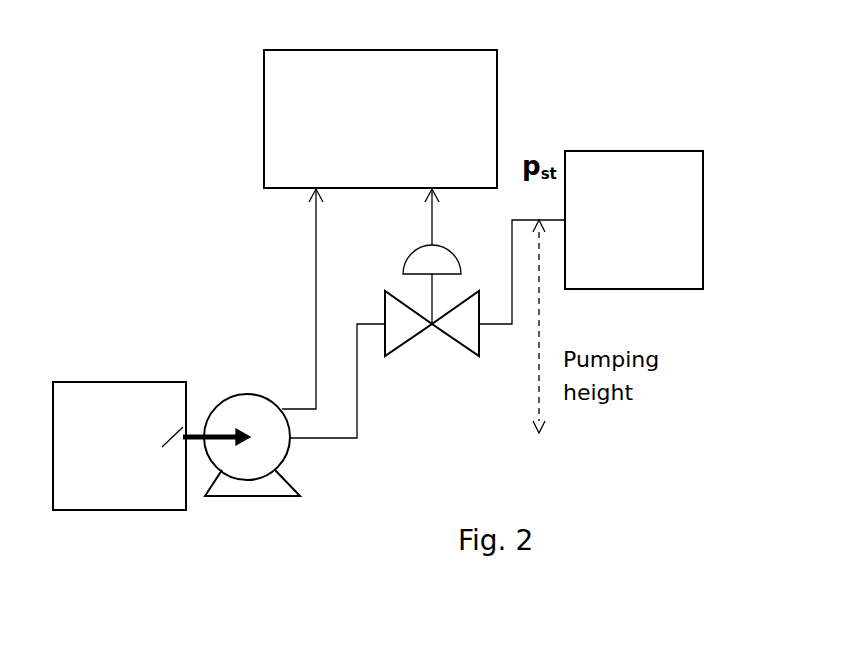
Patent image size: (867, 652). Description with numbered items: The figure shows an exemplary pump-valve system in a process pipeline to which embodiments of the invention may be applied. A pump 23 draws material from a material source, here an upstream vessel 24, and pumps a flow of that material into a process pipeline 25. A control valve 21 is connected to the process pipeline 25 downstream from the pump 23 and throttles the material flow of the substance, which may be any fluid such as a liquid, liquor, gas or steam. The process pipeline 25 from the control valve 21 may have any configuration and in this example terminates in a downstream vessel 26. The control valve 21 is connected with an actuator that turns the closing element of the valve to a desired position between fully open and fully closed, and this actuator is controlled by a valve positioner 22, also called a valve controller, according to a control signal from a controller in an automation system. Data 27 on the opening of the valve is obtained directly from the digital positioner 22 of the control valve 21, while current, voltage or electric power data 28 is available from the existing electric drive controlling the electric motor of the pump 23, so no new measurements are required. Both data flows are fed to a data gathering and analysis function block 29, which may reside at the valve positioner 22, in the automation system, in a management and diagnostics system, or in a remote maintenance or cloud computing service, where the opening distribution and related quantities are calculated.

The control valve 21 is at (478, 348).
The valve positioner 22 is at (407, 268).
The pump 23 is at (246, 394).
The upstream vessel 24 is at (99, 380).
The process pipeline 25 is at (360, 412).
The downstream vessel 26 is at (672, 150).
The data on the opening of the valve 27 is at (433, 208).
The electric power data 28 is at (315, 322).
The data gathering and analysis function block 29 is at (400, 50).